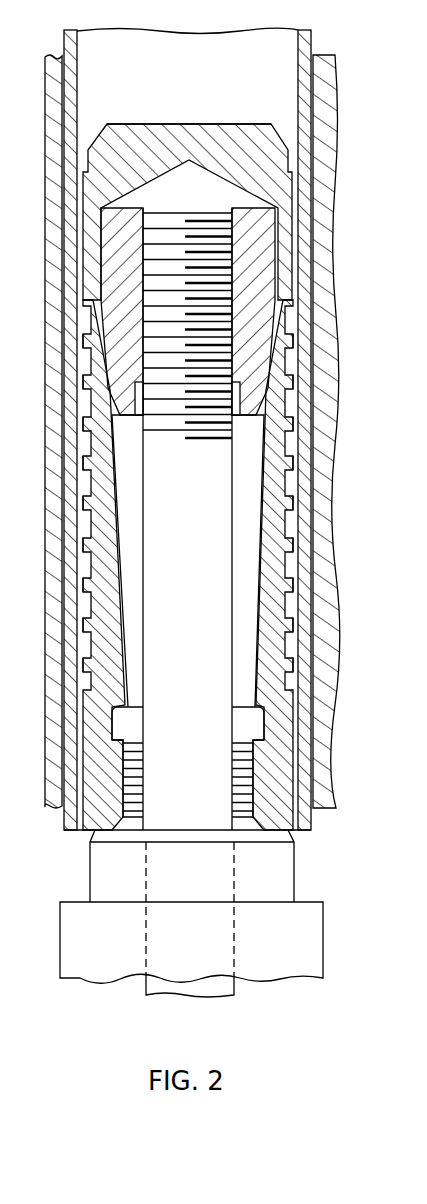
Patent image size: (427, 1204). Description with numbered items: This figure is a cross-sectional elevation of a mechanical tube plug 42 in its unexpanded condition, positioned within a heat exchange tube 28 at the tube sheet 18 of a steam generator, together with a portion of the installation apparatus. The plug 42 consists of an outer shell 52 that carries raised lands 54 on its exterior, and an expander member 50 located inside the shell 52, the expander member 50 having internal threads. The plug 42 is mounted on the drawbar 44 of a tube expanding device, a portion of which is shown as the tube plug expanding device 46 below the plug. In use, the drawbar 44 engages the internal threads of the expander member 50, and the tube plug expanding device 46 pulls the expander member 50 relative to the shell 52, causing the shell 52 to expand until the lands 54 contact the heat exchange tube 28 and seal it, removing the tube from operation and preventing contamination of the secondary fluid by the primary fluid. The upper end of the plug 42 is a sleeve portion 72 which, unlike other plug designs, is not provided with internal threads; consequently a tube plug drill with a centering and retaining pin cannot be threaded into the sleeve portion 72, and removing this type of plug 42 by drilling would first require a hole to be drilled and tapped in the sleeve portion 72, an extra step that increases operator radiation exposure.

The tube sheet 18 is at (328, 279).
The tube 28 is at (80, 42).
The plug 42 is at (217, 123).
The sleeve portion 72 is at (137, 125).
The expander member 50 is at (247, 220).
The shell 52 is at (288, 498).
The lands 54 is at (273, 477).
The drawbar 44 is at (198, 575).
The tube plug expanding device 46 is at (313, 921).